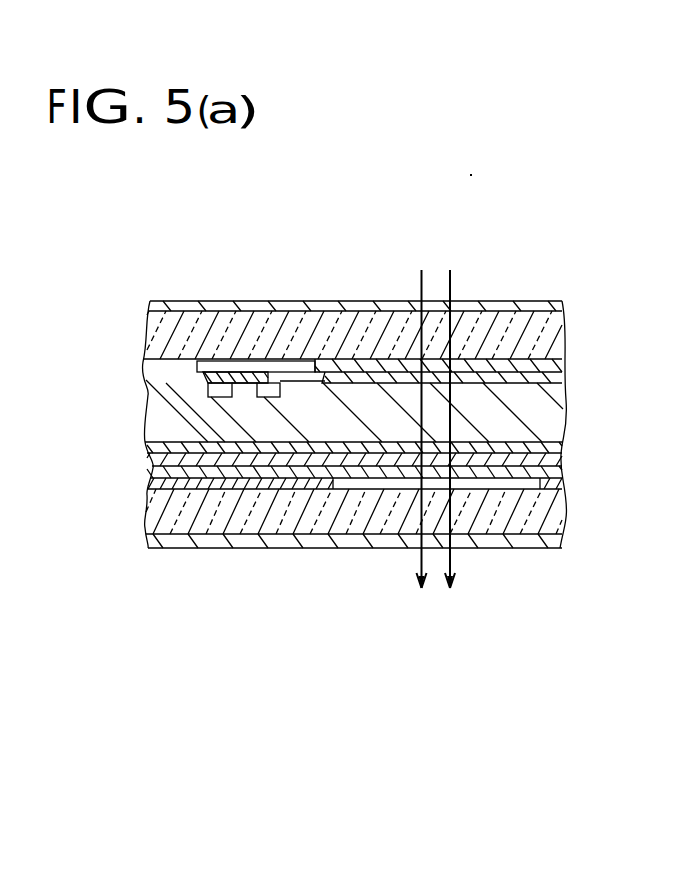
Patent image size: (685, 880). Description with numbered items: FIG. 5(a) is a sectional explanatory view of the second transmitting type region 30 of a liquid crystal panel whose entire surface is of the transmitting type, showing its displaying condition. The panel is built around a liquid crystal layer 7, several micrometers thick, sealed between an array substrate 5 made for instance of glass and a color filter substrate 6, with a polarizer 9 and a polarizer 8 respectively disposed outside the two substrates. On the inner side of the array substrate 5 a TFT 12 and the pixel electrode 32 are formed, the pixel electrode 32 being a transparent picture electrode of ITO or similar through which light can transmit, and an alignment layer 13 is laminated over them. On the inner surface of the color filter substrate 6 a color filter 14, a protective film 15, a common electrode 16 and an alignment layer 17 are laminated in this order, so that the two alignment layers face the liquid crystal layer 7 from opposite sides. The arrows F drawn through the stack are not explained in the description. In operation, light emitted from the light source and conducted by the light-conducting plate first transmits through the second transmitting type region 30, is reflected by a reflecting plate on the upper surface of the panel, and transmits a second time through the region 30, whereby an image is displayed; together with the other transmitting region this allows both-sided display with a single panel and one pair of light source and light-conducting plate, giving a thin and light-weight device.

The polarizer 9 is at (497, 308).
The array substrate 5 is at (540, 330).
The pixel electrode 32 is at (535, 361).
The alignment layer 13 is at (545, 375).
The liquid crystal layer 7 is at (537, 408).
The TFT 12 is at (190, 405).
The alignment layer 17 is at (538, 433).
The common electrode 16 is at (549, 457).
The protective film 15 is at (527, 483).
The color filter 14 is at (532, 517).
The color filter substrate 6 is at (564, 527).
The polarizer 8 is at (527, 540).
The second transmitting type region 30 is at (259, 592).
The pressing force F is at (423, 561).